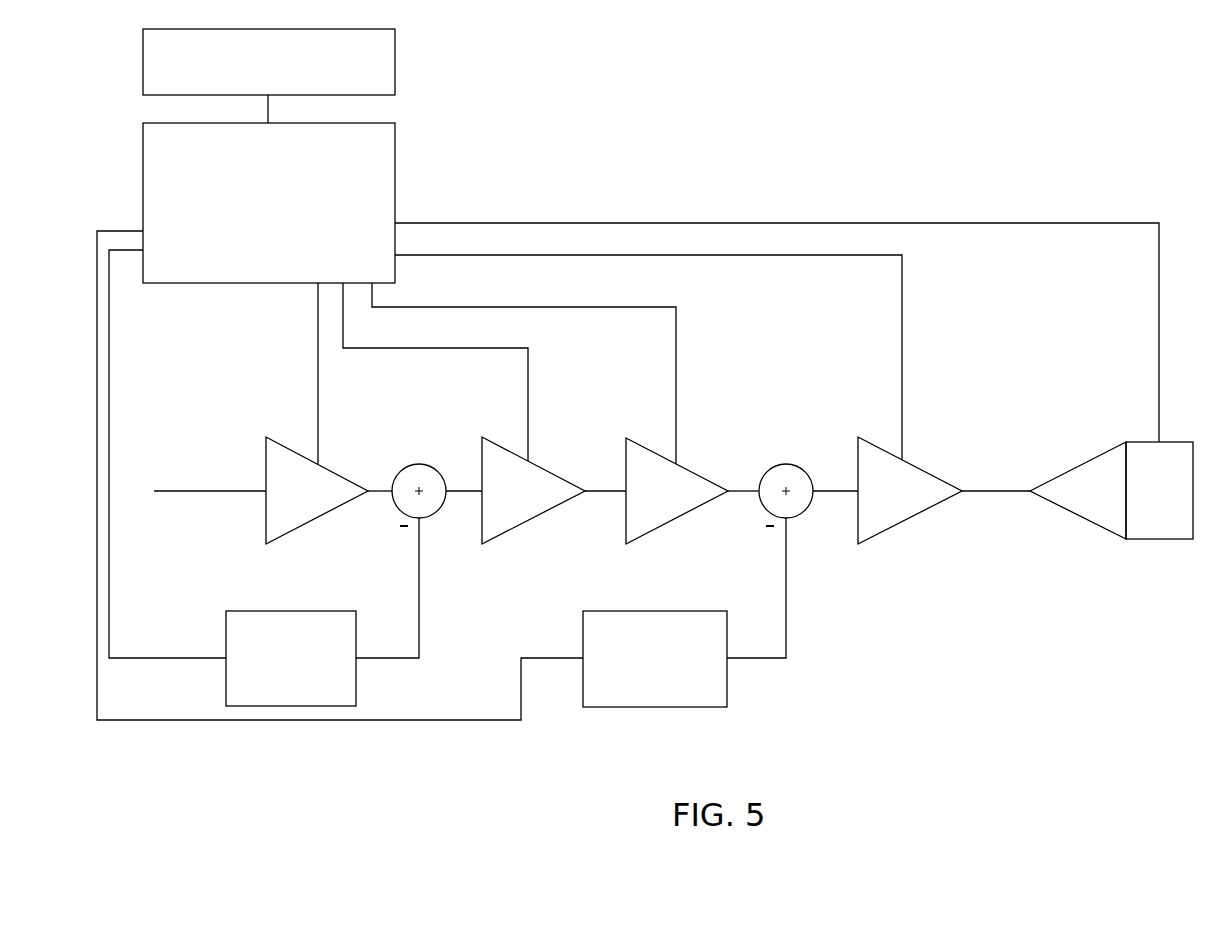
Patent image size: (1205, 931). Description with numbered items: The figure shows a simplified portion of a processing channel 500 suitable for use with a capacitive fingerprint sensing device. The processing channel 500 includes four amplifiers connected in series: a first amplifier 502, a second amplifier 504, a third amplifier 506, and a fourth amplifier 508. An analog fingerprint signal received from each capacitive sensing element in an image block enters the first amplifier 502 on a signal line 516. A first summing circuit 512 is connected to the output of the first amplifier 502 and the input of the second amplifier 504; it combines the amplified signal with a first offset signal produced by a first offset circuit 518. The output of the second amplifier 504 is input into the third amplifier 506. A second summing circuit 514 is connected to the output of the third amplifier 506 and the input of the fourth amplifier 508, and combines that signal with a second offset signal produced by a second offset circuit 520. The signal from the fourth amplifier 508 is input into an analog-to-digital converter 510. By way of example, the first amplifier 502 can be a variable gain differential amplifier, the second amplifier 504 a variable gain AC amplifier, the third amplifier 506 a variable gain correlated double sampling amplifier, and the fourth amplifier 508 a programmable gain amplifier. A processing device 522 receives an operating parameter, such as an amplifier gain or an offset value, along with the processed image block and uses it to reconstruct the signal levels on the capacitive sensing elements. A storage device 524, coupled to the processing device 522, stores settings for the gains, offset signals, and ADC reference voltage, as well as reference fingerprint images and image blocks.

The processing channel 500 is at (823, 681).
The first amplifier 502 is at (317, 490).
The second amplifier 504 is at (533, 490).
The third amplifier 506 is at (677, 491).
The fourth amplifier 508 is at (910, 490).
The analog-to-digital converter 510 is at (1111, 490).
The first summing circuit 512 is at (417, 464).
The second summing circuit 514 is at (785, 464).
The signal line 516 is at (173, 490).
The first offset circuit 518 is at (291, 658).
The second offset circuit 520 is at (655, 659).
The processing device 522 is at (269, 203).
The storage device 524 is at (269, 62).